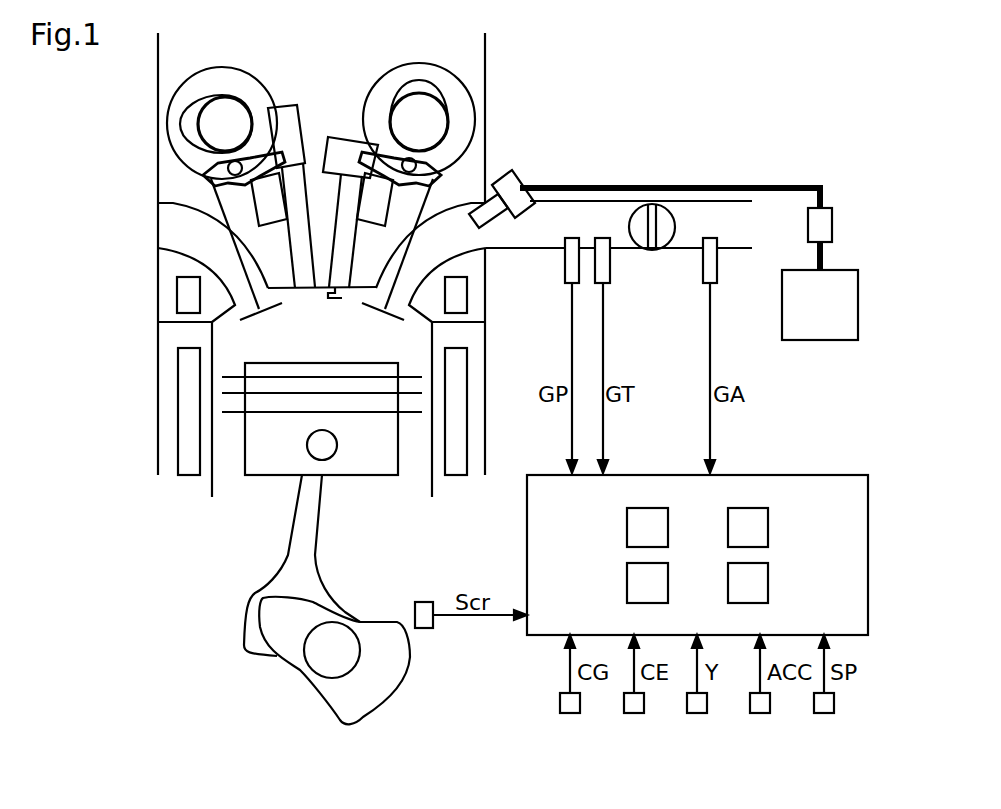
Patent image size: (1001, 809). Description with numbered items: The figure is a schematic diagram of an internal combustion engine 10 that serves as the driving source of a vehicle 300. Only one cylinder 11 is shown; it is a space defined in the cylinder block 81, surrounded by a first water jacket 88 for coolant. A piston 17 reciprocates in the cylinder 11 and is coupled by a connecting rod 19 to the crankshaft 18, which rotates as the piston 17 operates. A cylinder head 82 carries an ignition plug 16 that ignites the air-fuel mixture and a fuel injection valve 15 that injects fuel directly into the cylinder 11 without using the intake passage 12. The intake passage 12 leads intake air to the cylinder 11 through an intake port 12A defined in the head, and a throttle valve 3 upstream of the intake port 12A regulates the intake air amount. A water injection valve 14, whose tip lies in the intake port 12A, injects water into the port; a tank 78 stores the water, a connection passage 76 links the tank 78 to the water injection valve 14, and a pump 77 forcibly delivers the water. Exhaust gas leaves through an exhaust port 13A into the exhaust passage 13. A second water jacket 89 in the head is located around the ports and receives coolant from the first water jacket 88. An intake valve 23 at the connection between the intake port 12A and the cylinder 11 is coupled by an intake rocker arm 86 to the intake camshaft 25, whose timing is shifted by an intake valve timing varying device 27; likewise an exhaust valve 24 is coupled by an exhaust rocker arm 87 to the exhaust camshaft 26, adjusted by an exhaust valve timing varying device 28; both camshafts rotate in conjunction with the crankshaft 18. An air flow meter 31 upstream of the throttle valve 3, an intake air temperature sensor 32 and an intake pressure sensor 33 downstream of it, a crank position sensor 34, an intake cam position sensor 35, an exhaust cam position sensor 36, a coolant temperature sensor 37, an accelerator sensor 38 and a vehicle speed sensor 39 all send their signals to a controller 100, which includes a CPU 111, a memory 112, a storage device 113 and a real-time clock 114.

The internal combustion engine 10 is at (118, 90).
The cylinder 11 is at (222, 336).
The intake passage 12 is at (541, 248).
The intake port 12A is at (364, 290).
The exhaust passage 13 is at (157, 246).
The exhaust port 13A is at (280, 290).
The water injection valve 14 is at (520, 172).
The fuel injection valve 15 is at (287, 107).
The ignition plug 16 is at (347, 140).
The piston 17 is at (365, 477).
The crankshaft 18 is at (315, 665).
The connecting rod 19 is at (282, 558).
The intake valve 23 is at (412, 247).
The exhaust valve 24 is at (230, 242).
The intake camshaft 25 is at (402, 115).
The exhaust camshaft 26 is at (207, 135).
The intake valve timing varying device 27 is at (483, 108).
The exhaust valve timing varying device 28 is at (200, 72).
The throttle valve 3 is at (672, 236).
The air flow meter 31 is at (717, 275).
The intake air temperature sensor 32 is at (612, 275).
The intake pressure sensor 33 is at (575, 236).
The crank position sensor 34 is at (424, 600).
The intake cam position sensor 35 is at (570, 714).
The exhaust cam position sensor 36 is at (634, 714).
The coolant temperature sensor 37 is at (697, 714).
The accelerator sensor 38 is at (760, 714).
The vehicle speed sensor 39 is at (824, 714).
The connection passage 76 is at (732, 184).
The pump 77 is at (833, 228).
The tank 78 is at (858, 305).
The cylinder block 81 is at (157, 389).
The cylinder head 82 is at (486, 50).
The intake rocker arm 86 is at (435, 165).
The exhaust rocker arm 87 is at (240, 163).
The first water jacket 88 is at (178, 432).
The second water jacket 89 is at (467, 302).
The controller 100 is at (835, 470).
The CPU 111 is at (627, 528).
The memory 112 is at (768, 528).
The storage device 113 is at (627, 583).
The real-time clock 114 is at (768, 583).
The vehicle 300 is at (812, 57).